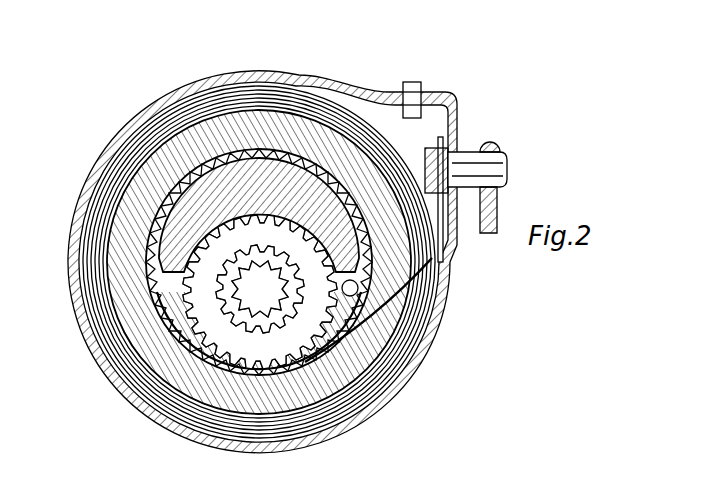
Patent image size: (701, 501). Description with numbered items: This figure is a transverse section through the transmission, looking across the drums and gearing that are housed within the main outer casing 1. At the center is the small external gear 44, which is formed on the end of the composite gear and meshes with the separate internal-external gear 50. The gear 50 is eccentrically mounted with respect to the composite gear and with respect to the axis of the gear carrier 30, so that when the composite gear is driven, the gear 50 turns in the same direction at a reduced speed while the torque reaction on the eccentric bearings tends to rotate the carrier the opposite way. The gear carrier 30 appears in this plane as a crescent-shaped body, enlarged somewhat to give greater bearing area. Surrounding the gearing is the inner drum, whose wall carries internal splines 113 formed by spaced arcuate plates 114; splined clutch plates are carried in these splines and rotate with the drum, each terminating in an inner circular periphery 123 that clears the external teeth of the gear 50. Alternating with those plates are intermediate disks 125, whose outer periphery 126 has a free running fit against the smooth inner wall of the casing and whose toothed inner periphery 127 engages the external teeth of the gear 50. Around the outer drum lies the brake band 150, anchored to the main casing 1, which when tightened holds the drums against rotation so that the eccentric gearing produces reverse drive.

The main outer casing 1 is at (230, 73).
The gear carrier and eccentric bearing support 30 is at (205, 205).
The small external gear 44 is at (243, 321).
The internal-external gear 50 is at (185, 297).
The internal splines 113 is at (247, 427).
The arcuate plates 114 is at (137, 400).
The inner circular periphery 123 is at (380, 397).
The intermediate disks 125 is at (317, 383).
The outer periphery of disk 126 is at (397, 335).
The toothed inner periphery 127 is at (380, 287).
The brake band 150 is at (313, 77).